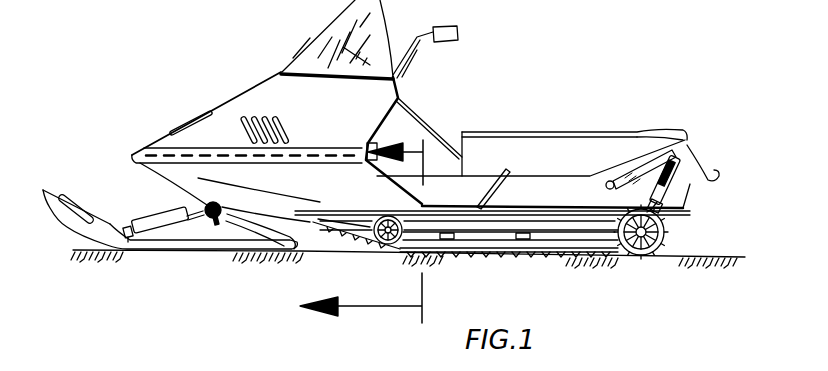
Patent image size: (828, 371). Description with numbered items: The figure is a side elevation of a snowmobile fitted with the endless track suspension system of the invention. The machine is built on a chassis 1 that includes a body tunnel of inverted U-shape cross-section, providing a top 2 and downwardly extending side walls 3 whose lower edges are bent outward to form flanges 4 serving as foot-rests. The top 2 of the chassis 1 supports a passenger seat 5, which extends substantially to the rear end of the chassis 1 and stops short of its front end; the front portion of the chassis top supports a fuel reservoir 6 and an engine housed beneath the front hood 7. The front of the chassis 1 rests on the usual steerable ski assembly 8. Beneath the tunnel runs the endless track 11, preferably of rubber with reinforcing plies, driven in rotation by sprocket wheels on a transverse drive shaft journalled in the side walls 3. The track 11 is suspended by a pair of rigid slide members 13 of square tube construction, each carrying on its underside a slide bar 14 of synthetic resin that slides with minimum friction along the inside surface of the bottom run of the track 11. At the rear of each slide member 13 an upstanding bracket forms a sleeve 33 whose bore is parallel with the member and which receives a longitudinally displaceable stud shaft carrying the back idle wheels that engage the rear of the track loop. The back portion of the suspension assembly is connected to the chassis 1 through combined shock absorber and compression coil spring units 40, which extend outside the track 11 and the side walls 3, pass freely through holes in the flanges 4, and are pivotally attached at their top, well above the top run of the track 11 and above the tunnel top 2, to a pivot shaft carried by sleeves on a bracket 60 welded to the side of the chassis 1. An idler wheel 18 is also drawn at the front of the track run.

The chassis 1 is at (541, 193).
The top 2 is at (592, 184).
The side walls 3 is at (568, 190).
The flanges 4 is at (506, 203).
The passenger seat 5 is at (647, 145).
The fuel reservoir 6 is at (403, 112).
The front hood 7 is at (240, 99).
The steerable ski assembly 8 is at (190, 256).
The endless track 11 is at (455, 247).
The rigid slide members 13 is at (523, 237).
The slide bar 14 is at (556, 246).
The front idler wheel 18 is at (352, 241).
The sleeve 33 is at (603, 256).
The combined shock absorber and compression coil spring units 40 is at (676, 190).
The bracket 60 is at (695, 165).